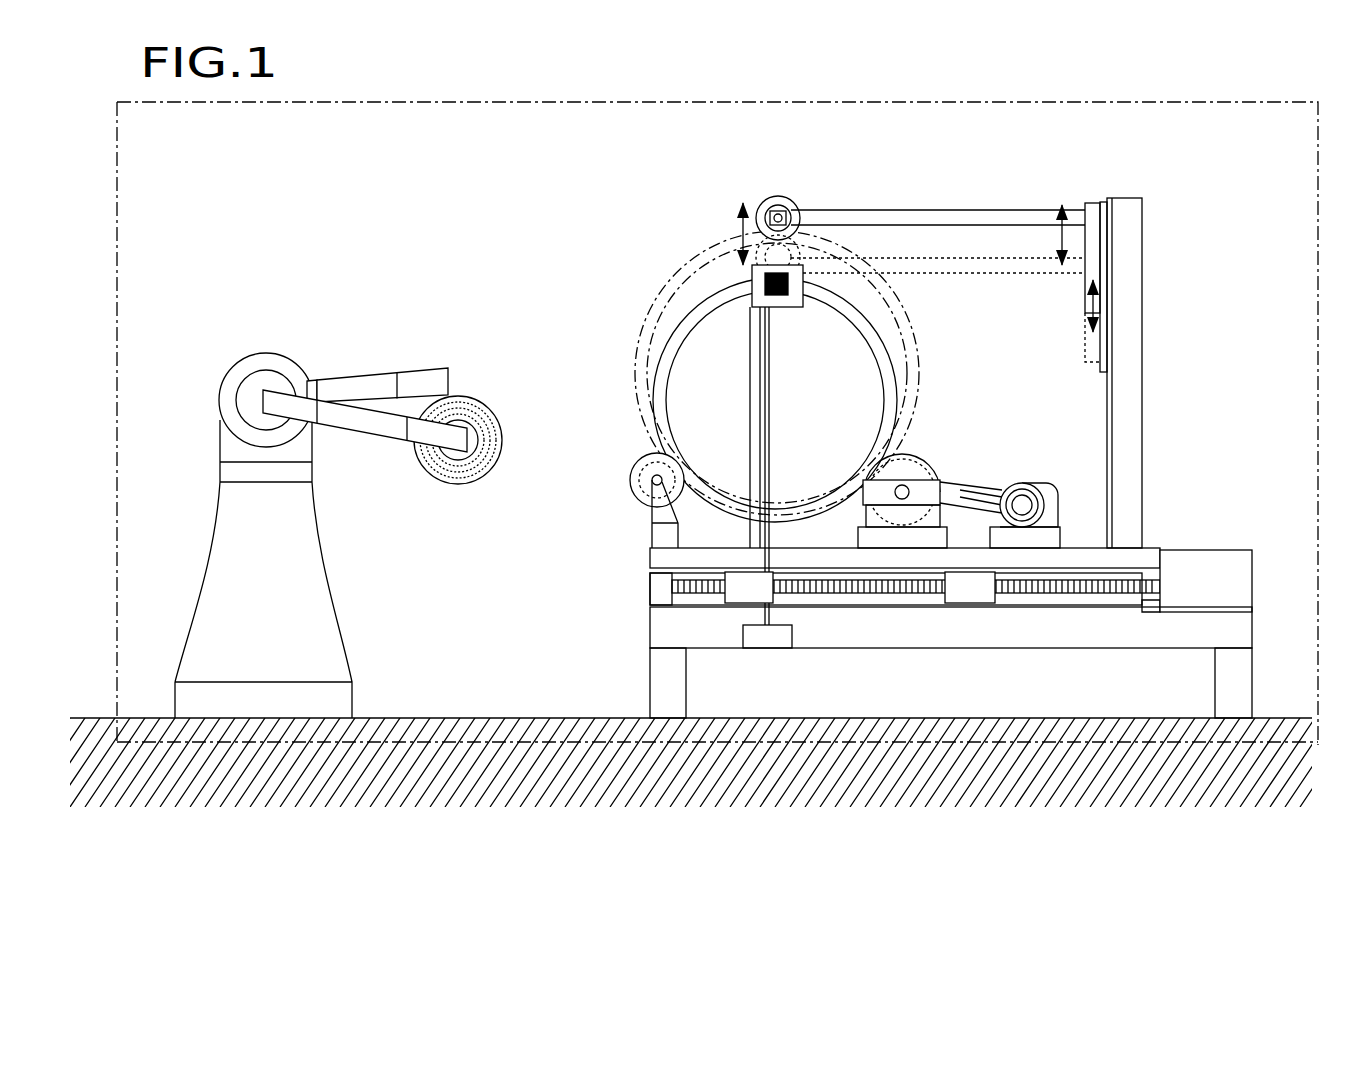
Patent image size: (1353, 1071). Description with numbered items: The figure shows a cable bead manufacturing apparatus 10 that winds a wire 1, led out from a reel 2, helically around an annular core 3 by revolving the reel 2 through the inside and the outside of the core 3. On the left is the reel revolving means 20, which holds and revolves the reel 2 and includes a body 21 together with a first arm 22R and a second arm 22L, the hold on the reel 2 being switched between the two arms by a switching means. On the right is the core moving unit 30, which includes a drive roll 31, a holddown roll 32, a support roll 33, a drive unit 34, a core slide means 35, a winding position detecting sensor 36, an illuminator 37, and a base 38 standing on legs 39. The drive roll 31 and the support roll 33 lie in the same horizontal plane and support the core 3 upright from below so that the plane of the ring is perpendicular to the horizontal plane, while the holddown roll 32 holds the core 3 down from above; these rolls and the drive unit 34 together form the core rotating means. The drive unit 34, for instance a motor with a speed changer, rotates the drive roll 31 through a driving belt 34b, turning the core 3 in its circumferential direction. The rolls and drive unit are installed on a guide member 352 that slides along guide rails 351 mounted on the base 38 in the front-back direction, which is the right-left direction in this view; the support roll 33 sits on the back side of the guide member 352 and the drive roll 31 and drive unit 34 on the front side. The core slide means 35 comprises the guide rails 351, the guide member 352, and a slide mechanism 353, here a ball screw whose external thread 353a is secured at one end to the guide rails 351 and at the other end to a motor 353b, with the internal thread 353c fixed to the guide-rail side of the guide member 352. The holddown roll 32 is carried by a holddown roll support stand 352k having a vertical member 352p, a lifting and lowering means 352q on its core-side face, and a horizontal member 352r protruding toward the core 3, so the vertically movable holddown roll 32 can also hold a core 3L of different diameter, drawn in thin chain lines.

The cable bead manufacturing apparatus 10 is at (717, 423).
The reel revolving means 20 is at (312, 330).
The body 21 is at (227, 450).
The second arm 22L is at (358, 373).
The first arm 22R is at (368, 428).
The wire 1 is at (500, 416).
The reel 2 is at (490, 423).
The core moving unit 30 is at (623, 308).
The annular core 3 is at (877, 346).
The core of a different diameter 3L is at (905, 306).
The drive roll 31 is at (905, 460).
The holddown roll 32 is at (773, 200).
The support roll 33 is at (652, 480).
The drive unit 34 is at (1022, 480).
The driving belt 34b is at (968, 483).
The core slide means 35 is at (546, 525).
The winding position detecting sensor 36 is at (790, 272).
The illuminator 37 is at (752, 272).
The base 38 is at (670, 637).
The legs 39 is at (1228, 676).
The guide rails 351 is at (683, 603).
The guide member 352 is at (698, 560).
The holddown roll support stand 352k is at (1140, 340).
The vertical member 352p is at (1127, 235).
The lifting and lowering means 352q is at (1102, 268).
The horizontal member 352r is at (910, 210).
The slide mechanism 353 is at (919, 604).
The external thread 353a is at (888, 592).
The motor 353b is at (1196, 550).
The internal thread 353c is at (746, 594).